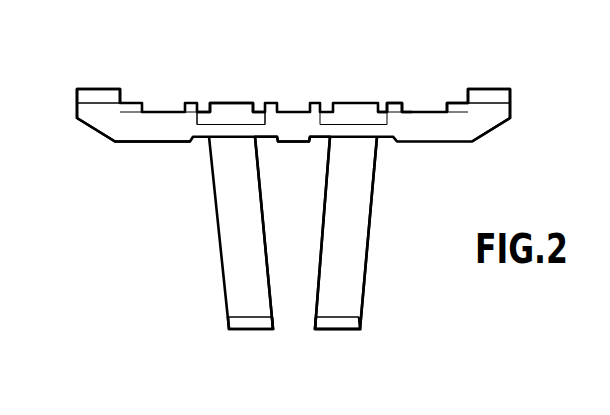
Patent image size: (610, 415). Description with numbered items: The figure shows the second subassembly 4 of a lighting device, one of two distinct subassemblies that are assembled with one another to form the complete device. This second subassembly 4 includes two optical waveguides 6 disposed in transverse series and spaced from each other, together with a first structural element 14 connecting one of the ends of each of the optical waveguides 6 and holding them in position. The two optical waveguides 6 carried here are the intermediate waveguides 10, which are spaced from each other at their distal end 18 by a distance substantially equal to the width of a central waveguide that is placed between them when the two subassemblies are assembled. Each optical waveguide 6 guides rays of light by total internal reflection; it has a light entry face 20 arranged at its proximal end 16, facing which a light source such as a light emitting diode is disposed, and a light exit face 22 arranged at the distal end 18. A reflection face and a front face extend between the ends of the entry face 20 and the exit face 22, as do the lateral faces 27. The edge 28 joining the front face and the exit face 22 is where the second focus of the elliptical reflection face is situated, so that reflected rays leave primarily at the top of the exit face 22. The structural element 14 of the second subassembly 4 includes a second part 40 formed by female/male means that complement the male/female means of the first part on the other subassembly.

The second subassembly 4 is at (175, 220).
The optical waveguide 6 is at (272, 280).
The intermediate waveguide 10 is at (355, 232).
The first structural element 14 is at (447, 98).
The proximal end 16 is at (110, 152).
The distal end 18 is at (368, 322).
The light entry face 20 is at (244, 100).
The light exit face 22 is at (260, 325).
The lateral face 27 is at (278, 325).
The edge 28 is at (337, 315).
The second part 40 is at (391, 97).